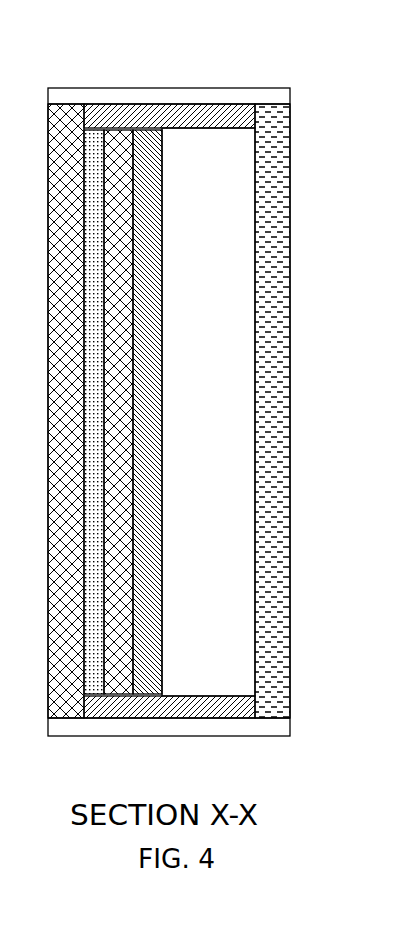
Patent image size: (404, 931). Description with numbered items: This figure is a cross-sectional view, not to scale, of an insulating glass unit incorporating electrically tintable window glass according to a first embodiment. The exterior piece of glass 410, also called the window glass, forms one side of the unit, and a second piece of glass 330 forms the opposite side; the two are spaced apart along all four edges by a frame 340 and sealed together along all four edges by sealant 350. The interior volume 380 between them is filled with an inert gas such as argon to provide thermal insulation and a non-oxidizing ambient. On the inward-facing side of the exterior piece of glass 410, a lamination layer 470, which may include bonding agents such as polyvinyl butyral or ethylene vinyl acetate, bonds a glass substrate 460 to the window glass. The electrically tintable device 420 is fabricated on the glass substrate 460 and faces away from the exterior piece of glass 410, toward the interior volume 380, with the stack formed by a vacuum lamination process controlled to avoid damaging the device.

The piece of glass 330 is at (280, 217).
The frame 340 is at (215, 108).
The sealant 350 is at (277, 93).
The interior volume 380 is at (218, 405).
The exterior piece of glass 410 is at (63, 647).
The electrically tintable device 420 is at (147, 130).
The glass substrate 460 is at (115, 680).
The lamination layer 470 is at (90, 680).